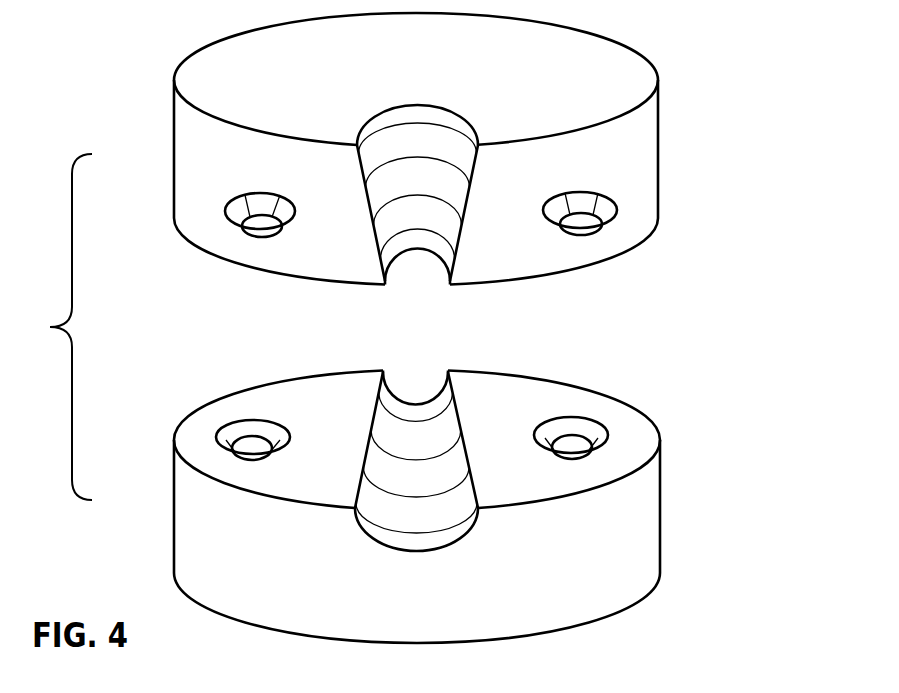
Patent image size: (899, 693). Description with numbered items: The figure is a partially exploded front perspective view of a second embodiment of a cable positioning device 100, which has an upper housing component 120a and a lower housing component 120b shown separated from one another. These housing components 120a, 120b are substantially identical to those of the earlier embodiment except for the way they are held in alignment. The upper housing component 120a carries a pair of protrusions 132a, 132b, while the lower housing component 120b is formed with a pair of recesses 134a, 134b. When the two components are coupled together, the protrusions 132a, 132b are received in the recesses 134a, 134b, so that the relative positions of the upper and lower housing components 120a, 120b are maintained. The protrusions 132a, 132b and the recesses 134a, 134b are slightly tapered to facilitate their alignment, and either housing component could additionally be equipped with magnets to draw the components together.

The cable positioning device 100 is at (678, 24).
The upper housing component 120a is at (660, 127).
The lower housing component 120b is at (661, 517).
The protrusion 132a is at (233, 213).
The protrusion 132b is at (603, 213).
The recess 134a is at (252, 420).
The recess 134b is at (592, 420).